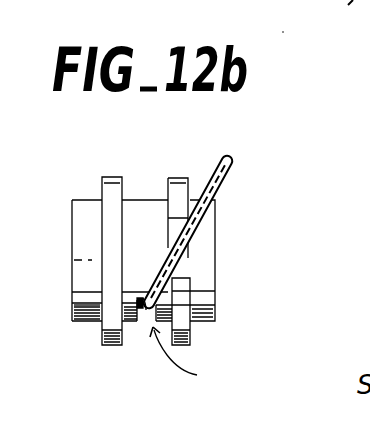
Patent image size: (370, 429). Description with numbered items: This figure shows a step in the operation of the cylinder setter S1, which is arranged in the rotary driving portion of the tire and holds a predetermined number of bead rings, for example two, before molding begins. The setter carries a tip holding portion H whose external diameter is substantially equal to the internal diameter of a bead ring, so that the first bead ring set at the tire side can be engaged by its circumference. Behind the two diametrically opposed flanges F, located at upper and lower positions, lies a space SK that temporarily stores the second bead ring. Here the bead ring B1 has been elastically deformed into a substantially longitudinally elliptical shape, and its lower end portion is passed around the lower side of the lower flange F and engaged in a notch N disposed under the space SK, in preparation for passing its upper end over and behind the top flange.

The space SK is at (138, 199).
The flange F is at (179, 183).
The bead ring B1 is at (233, 160).
The tip holding portion H is at (205, 232).
The notch N is at (146, 314).
The cylinder setter S1 is at (88, 326).